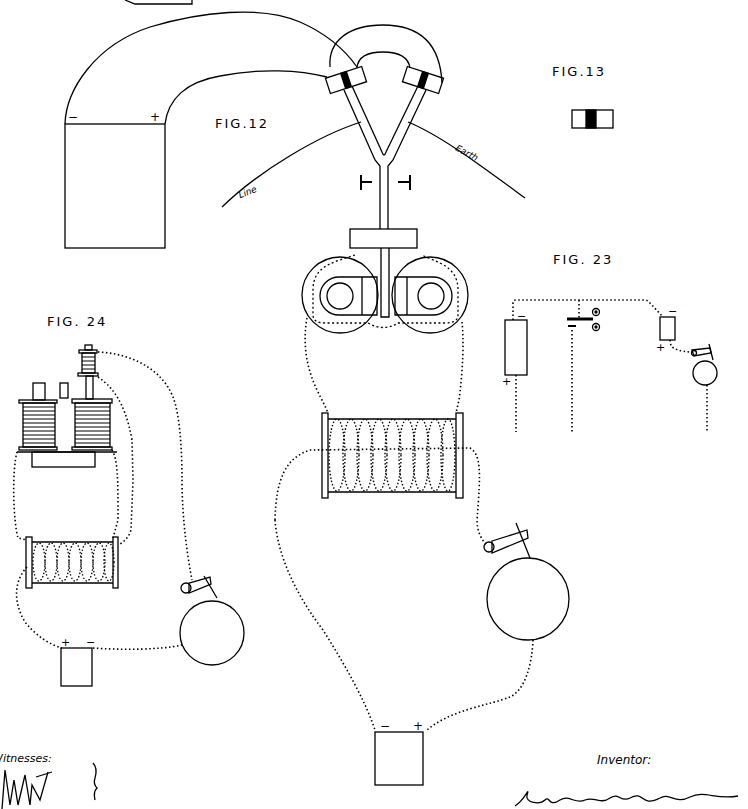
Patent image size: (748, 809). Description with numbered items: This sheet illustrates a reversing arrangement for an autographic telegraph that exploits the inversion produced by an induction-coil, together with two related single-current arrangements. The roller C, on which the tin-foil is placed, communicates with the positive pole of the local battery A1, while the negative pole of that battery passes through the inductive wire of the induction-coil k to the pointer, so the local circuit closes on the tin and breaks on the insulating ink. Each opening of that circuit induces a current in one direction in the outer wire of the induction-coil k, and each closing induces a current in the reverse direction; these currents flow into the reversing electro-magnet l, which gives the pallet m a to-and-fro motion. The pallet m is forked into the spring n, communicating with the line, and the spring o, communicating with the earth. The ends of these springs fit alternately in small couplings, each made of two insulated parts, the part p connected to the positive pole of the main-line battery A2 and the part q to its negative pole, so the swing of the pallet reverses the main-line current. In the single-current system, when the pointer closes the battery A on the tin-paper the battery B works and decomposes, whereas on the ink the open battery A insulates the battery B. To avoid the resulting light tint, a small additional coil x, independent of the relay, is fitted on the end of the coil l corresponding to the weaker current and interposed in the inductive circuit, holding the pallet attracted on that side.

In FIG. 12, the main-line battery A2 is at (115, 186).
In FIG. 12, the coupling part p is at (384, 80).
In FIG. 13, the coupling part p is at (592, 119).
In FIG. 12, the coupling part q is at (383, 79).
In FIG. 13, the coupling part q is at (603, 121).
In FIG. 12, the spring n is at (361, 157).
In FIG. 12, the spring o is at (406, 157).
In FIG. 12, the pallet m is at (383, 228).
In FIG. 12, the reversing electro-magnet l is at (385, 295).
In FIG. 24, the reversing electro-magnet l is at (92, 424).
In FIG. 12, the induction-coil k is at (392, 455).
In FIG. 12, the roller C is at (528, 599).
In FIG. 12, the local battery A1 is at (399, 758).
In FIG. 23, the battery A is at (516, 347).
In FIG. 23, the battery B is at (667, 328).
In FIG. 24, the additional coil x is at (88, 360).